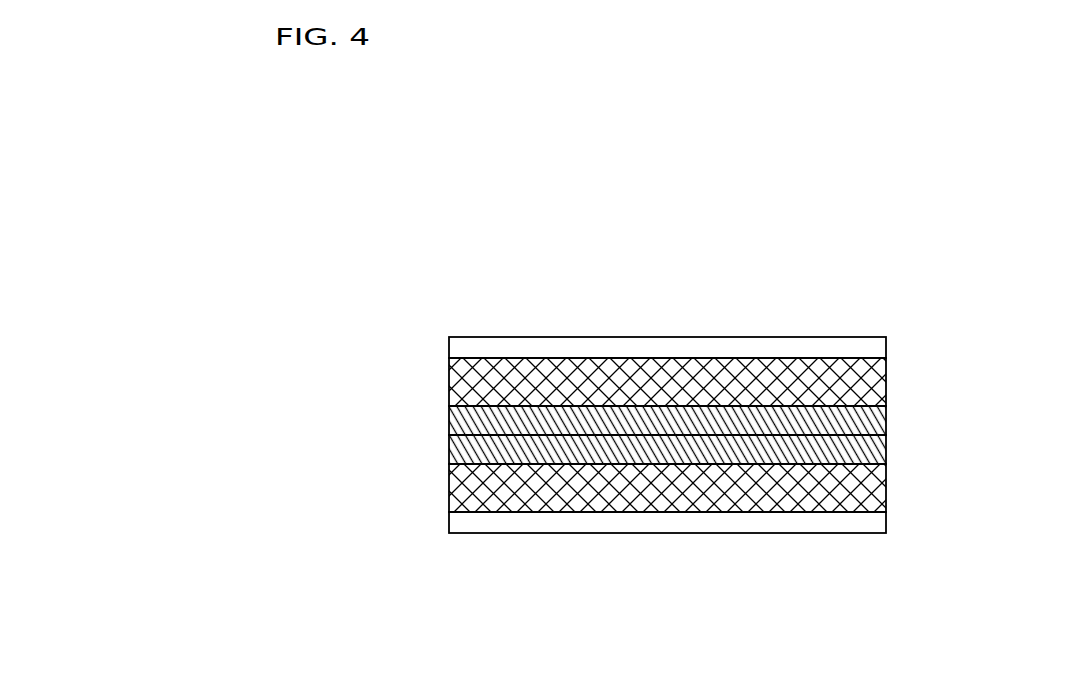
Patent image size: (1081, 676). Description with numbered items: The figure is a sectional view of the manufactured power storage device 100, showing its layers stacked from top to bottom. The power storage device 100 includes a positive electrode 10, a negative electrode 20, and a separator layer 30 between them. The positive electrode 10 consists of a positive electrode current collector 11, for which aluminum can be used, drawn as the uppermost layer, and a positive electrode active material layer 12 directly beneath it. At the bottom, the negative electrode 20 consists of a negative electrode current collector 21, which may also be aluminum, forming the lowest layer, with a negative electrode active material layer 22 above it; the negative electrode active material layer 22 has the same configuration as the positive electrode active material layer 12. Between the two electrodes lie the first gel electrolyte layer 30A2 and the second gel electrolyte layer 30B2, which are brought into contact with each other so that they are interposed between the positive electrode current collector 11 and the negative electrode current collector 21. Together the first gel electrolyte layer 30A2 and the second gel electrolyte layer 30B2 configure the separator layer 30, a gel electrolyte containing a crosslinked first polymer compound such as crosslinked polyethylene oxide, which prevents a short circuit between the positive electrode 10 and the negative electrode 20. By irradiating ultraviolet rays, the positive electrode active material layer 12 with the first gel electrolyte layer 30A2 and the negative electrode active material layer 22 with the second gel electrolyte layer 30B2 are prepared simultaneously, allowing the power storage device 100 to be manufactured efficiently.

The power storage device 100 is at (488, 297).
The positive electrode 10 is at (1002, 335).
The positive electrode current collector 11 is at (886, 345).
The positive electrode active material layer 12 is at (886, 388).
The separator layer 30 is at (1007, 405).
The first gel electrolyte layer 30A2 is at (886, 420).
The second gel electrolyte layer 30B2 is at (886, 450).
The negative electrode 20 is at (1007, 475).
The negative electrode active material layer 22 is at (886, 490).
The negative electrode current collector 21 is at (886, 523).